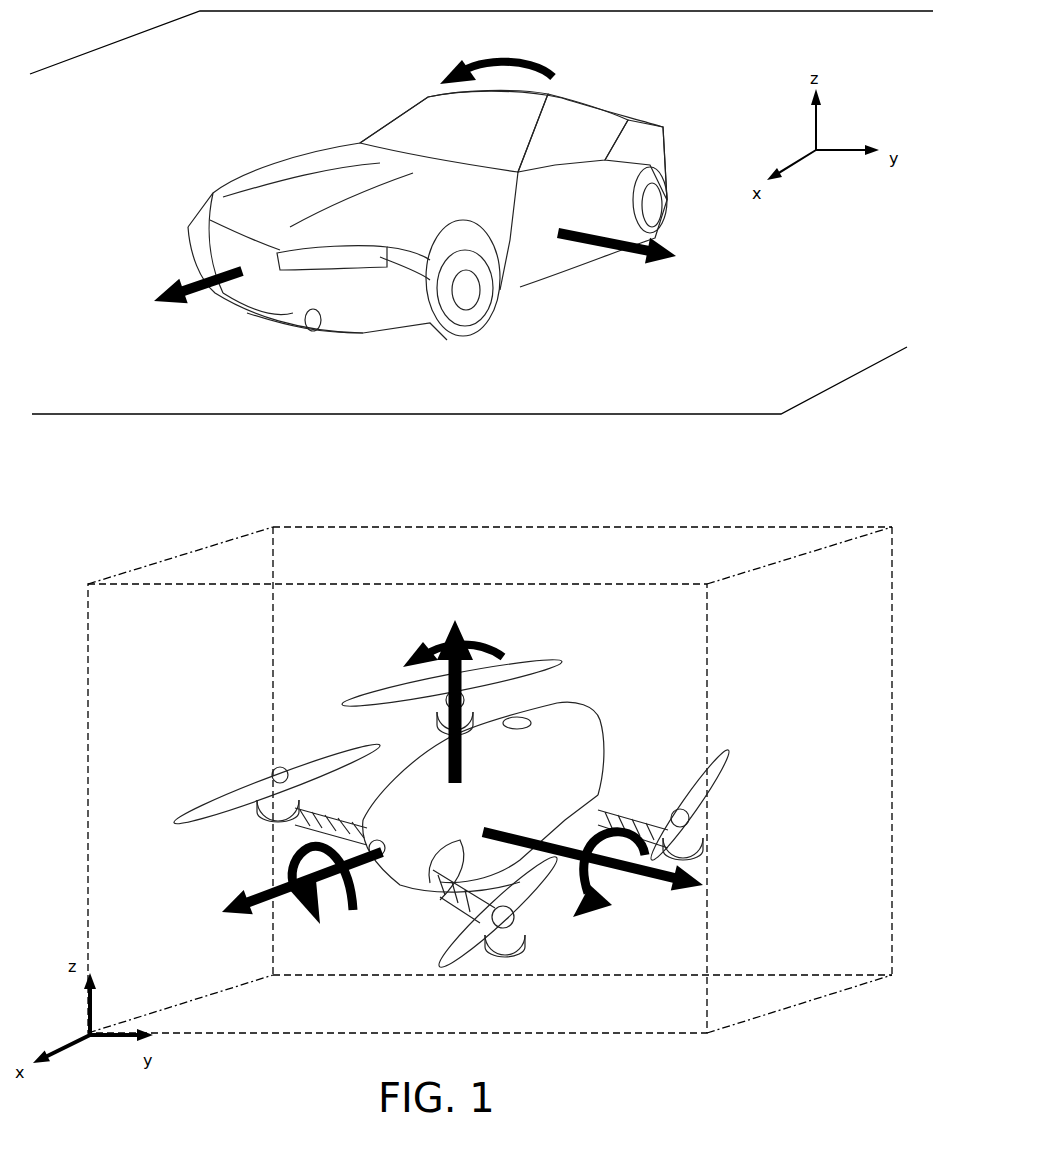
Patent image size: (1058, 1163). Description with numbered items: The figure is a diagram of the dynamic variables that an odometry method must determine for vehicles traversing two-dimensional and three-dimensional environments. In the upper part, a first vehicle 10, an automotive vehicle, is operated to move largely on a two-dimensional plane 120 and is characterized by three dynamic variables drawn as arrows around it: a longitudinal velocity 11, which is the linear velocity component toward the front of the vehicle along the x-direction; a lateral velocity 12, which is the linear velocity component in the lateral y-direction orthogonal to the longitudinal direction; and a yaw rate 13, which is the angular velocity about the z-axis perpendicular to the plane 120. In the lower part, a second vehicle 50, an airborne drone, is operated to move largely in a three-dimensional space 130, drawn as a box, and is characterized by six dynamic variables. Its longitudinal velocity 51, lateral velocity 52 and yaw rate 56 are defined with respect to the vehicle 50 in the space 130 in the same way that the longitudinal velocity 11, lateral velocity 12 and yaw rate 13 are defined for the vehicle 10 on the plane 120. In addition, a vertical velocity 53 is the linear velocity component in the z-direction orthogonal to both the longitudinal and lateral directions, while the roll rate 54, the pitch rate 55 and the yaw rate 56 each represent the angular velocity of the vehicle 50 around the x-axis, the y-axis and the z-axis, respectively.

The first vehicle 10 is at (427, 213).
The longitudinal velocity 11 is at (176, 320).
The lateral velocity 12 is at (630, 276).
The yaw rate 13 is at (480, 54).
The 2D plane 120 is at (765, 387).
The 3D space 130 is at (490, 760).
The second vehicle 50 is at (453, 814).
The longitudinal velocity 51 is at (268, 917).
The lateral velocity 52 is at (611, 904).
The vertical velocity 53 is at (401, 689).
The roll rate 54 is at (329, 891).
The pitch rate 55 is at (609, 875).
The yaw rate 56 is at (434, 662).